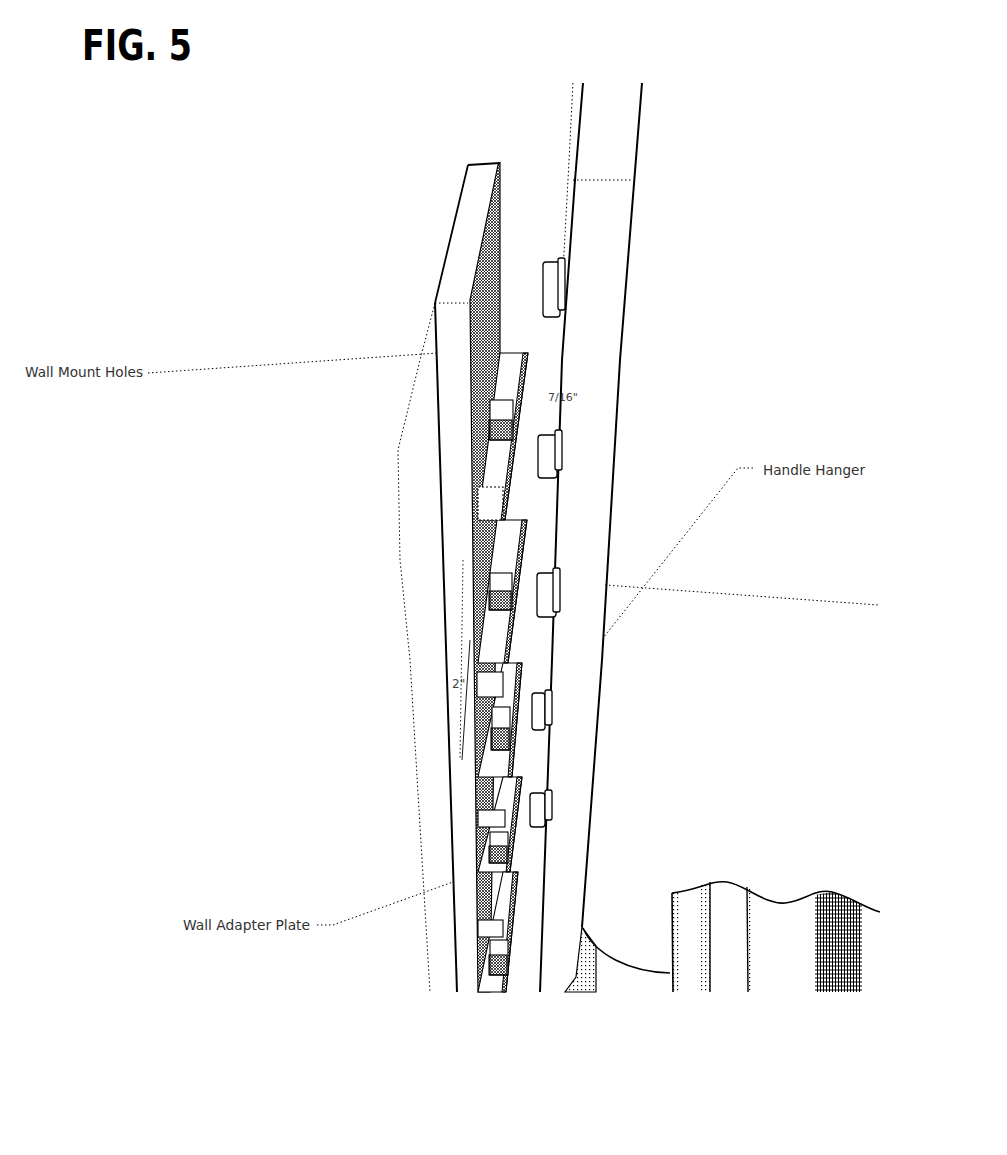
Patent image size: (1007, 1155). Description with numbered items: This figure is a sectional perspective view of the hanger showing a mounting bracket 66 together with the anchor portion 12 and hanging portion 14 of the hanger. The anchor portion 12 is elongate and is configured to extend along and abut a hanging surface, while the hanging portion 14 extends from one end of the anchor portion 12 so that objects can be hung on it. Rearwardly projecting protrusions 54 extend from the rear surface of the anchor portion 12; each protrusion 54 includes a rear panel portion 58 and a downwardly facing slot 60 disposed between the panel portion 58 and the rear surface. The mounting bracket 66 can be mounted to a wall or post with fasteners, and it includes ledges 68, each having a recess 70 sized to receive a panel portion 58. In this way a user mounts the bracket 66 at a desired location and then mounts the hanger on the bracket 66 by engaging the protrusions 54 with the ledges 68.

The anchor portion 12 is at (607, 230).
The hanging portion 14 is at (778, 975).
The protrusions 54 is at (565, 258).
The rear panel portion 58 is at (540, 470).
The slot 60 is at (560, 297).
The mounting bracket 66 is at (468, 183).
The ledges 68 is at (490, 487).
The recess 70 is at (498, 405).